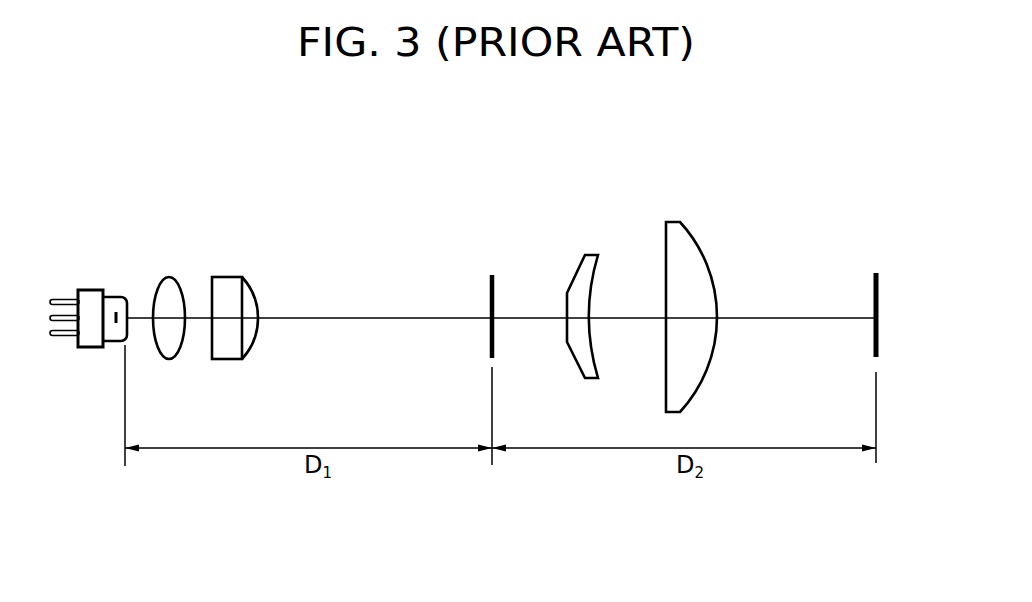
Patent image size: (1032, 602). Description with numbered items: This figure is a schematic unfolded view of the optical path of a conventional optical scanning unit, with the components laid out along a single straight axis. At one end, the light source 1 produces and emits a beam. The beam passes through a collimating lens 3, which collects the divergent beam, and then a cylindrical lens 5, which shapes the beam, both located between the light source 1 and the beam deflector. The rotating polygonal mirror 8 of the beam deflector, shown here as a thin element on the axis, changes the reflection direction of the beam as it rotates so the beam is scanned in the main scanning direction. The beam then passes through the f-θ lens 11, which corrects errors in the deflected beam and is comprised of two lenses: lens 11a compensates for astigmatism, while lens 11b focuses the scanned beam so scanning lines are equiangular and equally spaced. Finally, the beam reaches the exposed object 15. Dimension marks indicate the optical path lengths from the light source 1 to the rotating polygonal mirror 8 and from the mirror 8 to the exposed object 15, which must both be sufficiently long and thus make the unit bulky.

The light source 1 is at (92, 290).
The collimating lens 3 is at (169, 277).
The cylindrical lens 5 is at (228, 277).
The rotating polygonal mirror 8 is at (492, 275).
The f-θ lens 11 is at (672, 158).
The lens 11a is at (595, 255).
The lens 11b is at (672, 222).
The exposed object 15 is at (875, 272).